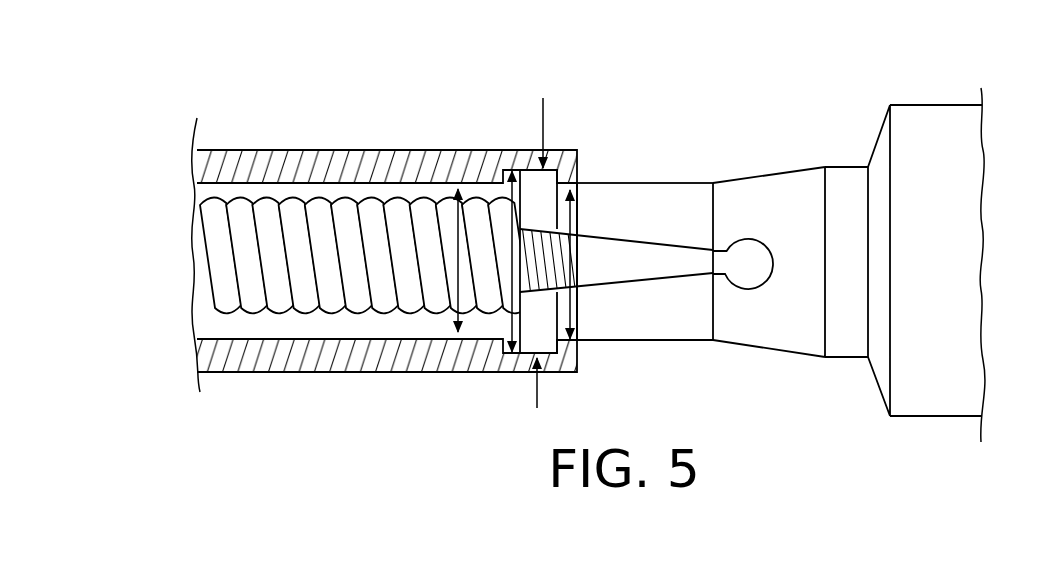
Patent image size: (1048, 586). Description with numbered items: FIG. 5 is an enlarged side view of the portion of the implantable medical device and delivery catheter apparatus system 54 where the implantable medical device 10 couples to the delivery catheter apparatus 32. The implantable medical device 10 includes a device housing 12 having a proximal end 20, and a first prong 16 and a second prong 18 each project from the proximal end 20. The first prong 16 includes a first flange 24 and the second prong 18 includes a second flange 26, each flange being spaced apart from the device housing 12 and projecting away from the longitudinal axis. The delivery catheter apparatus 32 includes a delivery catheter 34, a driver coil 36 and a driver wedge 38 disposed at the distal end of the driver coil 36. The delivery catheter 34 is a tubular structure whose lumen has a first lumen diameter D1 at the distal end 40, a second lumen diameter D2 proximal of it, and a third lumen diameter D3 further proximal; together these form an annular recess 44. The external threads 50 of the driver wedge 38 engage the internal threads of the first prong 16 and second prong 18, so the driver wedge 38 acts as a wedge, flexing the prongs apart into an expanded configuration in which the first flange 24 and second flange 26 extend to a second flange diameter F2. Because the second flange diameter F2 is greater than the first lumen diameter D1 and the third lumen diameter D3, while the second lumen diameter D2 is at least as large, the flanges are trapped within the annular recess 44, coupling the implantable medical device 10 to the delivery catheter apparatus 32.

The implantable medical device 10 is at (957, 105).
The device housing 12 is at (910, 105).
The first prong 16 is at (657, 182).
The second prong 18 is at (661, 344).
The proximal end 20 is at (830, 167).
The first flange 24 is at (546, 175).
The second flange 26 is at (541, 334).
The delivery catheter apparatus 32 is at (313, 150).
The delivery catheter 34 is at (435, 150).
The driver coil 36 is at (383, 197).
The driver wedge 38 is at (632, 259).
The distal end 40 is at (573, 188).
The annular recess 44 is at (501, 356).
The external threads 50 is at (586, 250).
The implantable medical device and delivery catheter apparatus system 54 is at (717, 90).
The first lumen diameter D1 is at (573, 217).
The second lumen diameter D2 is at (498, 168).
The third lumen diameter D3 is at (459, 334).
The second flange diameter F2 is at (543, 112).